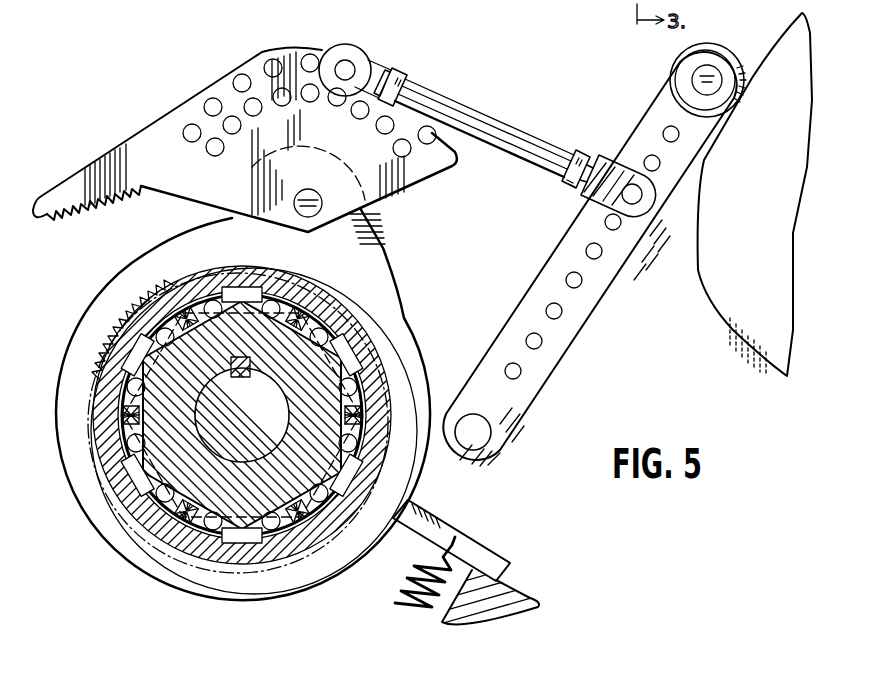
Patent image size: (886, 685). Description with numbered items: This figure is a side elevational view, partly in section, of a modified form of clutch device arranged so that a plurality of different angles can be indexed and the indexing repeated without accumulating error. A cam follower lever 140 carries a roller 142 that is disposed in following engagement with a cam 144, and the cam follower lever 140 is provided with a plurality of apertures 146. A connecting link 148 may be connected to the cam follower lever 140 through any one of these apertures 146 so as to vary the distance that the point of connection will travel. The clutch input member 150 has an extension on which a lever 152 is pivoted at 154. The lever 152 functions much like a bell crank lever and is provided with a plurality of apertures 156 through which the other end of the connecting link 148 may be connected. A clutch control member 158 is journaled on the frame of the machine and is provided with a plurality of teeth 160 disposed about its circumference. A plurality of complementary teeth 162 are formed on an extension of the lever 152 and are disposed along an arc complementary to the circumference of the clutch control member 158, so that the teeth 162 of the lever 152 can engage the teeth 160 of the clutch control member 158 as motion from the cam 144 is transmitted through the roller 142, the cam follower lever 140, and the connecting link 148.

The cam follower lever 140 is at (545, 268).
The roller 142 is at (670, 64).
The cam 144 is at (697, 262).
The apertures 146 is at (542, 344).
The connecting link 148 is at (498, 122).
The clutch input member 150 is at (384, 247).
The lever 152 is at (170, 112).
The pivot 154 is at (312, 190).
The apertures 156 is at (273, 59).
The clutch control member 158 is at (365, 340).
The teeth 160 is at (97, 348).
The complementary teeth 162 is at (104, 210).